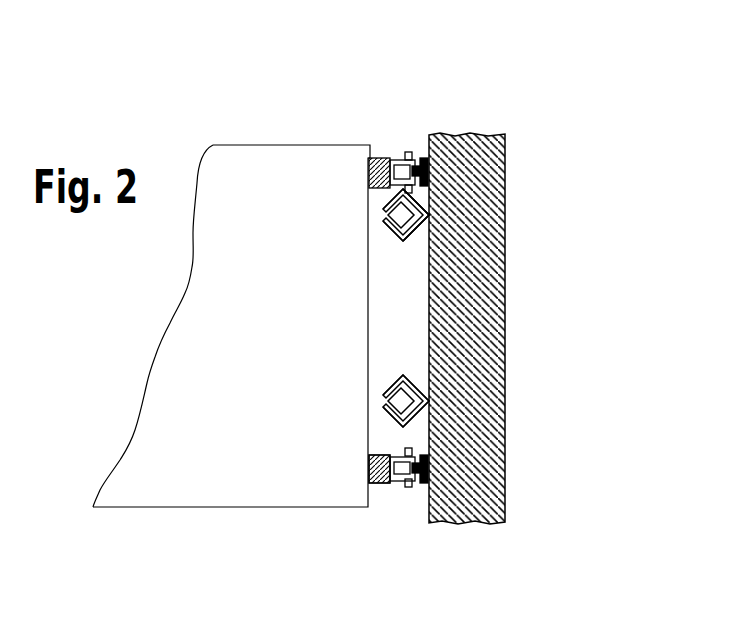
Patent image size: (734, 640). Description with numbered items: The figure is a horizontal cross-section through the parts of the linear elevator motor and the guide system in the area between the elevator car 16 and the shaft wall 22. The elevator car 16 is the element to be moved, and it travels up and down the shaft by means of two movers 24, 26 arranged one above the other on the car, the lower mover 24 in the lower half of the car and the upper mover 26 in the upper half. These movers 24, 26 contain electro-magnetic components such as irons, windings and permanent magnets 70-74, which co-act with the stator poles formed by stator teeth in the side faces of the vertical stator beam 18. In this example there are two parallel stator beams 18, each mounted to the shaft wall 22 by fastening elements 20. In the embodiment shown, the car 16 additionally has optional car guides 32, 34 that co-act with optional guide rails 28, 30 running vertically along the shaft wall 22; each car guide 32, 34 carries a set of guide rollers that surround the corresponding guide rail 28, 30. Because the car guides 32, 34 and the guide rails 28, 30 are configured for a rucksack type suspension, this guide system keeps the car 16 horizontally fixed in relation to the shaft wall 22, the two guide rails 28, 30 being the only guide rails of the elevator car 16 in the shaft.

The elevator car 16 is at (217, 380).
The stator beam 18 is at (394, 213).
The fastening element 20 is at (424, 217).
The shaft wall 22 is at (468, 273).
The lower mover 24 is at (387, 206).
The upper mover 26 is at (379, 405).
The guide rail 28 is at (450, 135).
The guide rail 30 is at (417, 482).
The car guide 32 is at (390, 157).
The car guide 34 is at (381, 482).
The electro-magnetic components 70-74 is at (567, 639).